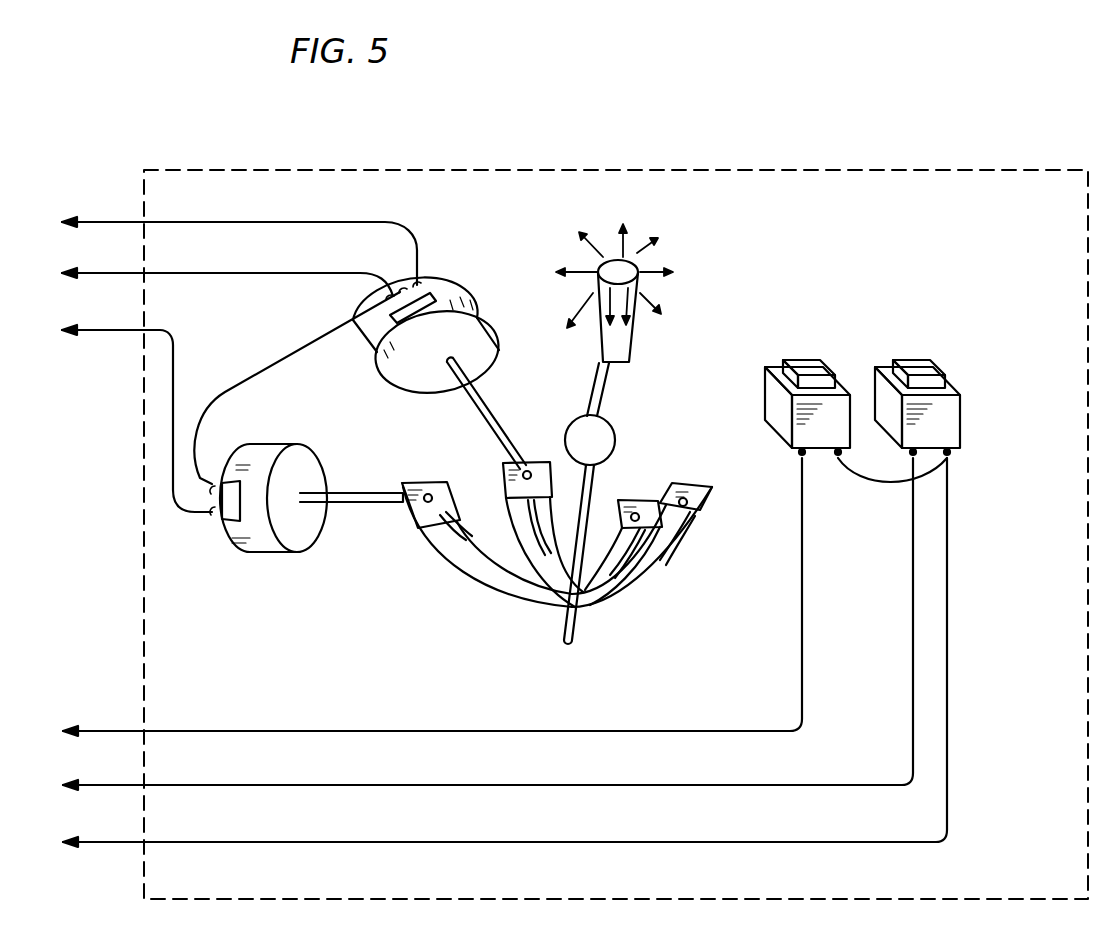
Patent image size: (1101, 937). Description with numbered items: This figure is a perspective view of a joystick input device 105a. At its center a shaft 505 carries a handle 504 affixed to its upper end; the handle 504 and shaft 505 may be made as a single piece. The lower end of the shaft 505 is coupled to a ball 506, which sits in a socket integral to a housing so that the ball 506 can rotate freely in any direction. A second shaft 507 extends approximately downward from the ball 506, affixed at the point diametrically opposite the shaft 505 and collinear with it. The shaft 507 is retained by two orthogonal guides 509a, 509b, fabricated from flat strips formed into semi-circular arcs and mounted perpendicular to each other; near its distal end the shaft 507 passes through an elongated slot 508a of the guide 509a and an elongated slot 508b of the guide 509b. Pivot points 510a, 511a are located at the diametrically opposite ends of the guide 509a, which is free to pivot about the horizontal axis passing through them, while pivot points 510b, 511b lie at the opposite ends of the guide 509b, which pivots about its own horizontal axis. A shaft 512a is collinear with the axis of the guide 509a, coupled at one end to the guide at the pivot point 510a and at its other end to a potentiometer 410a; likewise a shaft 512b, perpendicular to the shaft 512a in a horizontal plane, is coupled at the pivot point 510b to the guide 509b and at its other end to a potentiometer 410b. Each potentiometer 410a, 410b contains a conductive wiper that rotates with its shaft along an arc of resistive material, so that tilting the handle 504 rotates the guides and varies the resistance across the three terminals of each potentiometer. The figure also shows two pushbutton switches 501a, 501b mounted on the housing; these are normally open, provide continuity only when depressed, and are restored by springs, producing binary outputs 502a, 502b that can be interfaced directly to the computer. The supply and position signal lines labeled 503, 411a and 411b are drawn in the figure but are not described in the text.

The joystick input device 105a is at (636, 170).
The X1 output line 411a is at (103, 222).
The Y1 output line 411b is at (105, 330).
The +5V supply line 503 is at (104, 273).
The potentiometer 410a is at (440, 284).
The potentiometer 410b is at (262, 445).
The shaft 512a is at (470, 392).
The shaft 512b is at (373, 503).
The pivot point 510a is at (530, 470).
The pivot point 510b is at (427, 490).
The pivot point 511a is at (650, 500).
The pivot point 511b is at (700, 518).
The elongated slot 508a is at (505, 490).
The elongated slot 508b is at (457, 520).
The guide 509a is at (650, 530).
The guide 509b is at (690, 482).
The handle 504 is at (645, 283).
The shaft 505 is at (600, 385).
The ball 506 is at (610, 440).
The shaft 507 is at (570, 648).
The pushbutton switch 501a is at (770, 397).
The pushbutton switch 501b is at (962, 405).
The binary output 502a is at (106, 731).
The binary output 502b is at (108, 785).